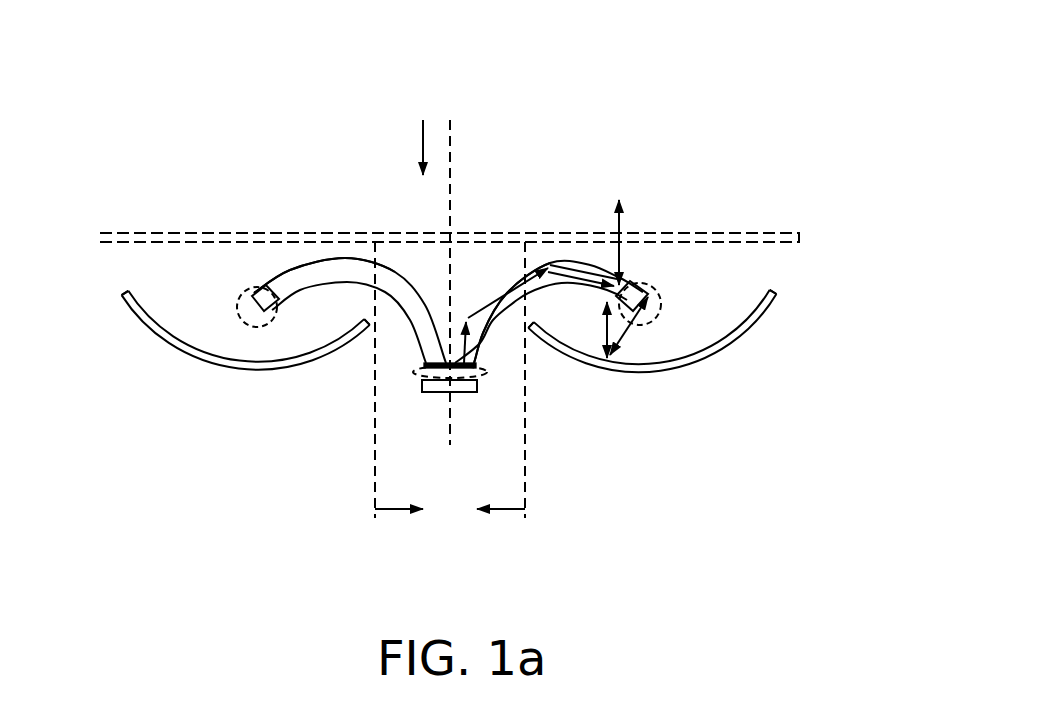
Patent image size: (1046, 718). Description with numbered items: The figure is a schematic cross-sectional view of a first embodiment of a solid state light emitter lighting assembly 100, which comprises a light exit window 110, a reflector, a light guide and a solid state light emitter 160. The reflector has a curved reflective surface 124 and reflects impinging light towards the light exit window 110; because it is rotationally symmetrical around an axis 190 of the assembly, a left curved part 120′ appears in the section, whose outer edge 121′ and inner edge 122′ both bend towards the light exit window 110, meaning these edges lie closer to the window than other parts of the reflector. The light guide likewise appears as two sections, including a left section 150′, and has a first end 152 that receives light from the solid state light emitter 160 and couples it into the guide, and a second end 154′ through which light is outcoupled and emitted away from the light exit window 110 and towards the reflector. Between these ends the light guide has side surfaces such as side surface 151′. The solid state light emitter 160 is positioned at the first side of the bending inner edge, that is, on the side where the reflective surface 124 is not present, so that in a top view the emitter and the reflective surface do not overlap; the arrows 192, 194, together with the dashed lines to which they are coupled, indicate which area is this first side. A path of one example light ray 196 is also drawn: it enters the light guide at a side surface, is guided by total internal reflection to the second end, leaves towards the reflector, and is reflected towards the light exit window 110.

The solid state light emitter lighting assembly 100 is at (145, 96).
The light exit window 110 is at (778, 233).
The left curved part of the reflector 120′ is at (220, 369).
The outer edge 121′ is at (84, 280).
The inner edge 122′ is at (366, 321).
The curved reflective surface 124 is at (187, 345).
The left section of the light guide 150′ is at (310, 274).
The side surface 151′ is at (359, 258).
The first end 152 is at (484, 375).
The second end 154′ is at (248, 290).
The solid state light emitter 160 is at (428, 392).
The axis 190 is at (450, 136).
The arrow 192 is at (392, 509).
The arrow 194 is at (507, 509).
The light ray 196 is at (620, 226).